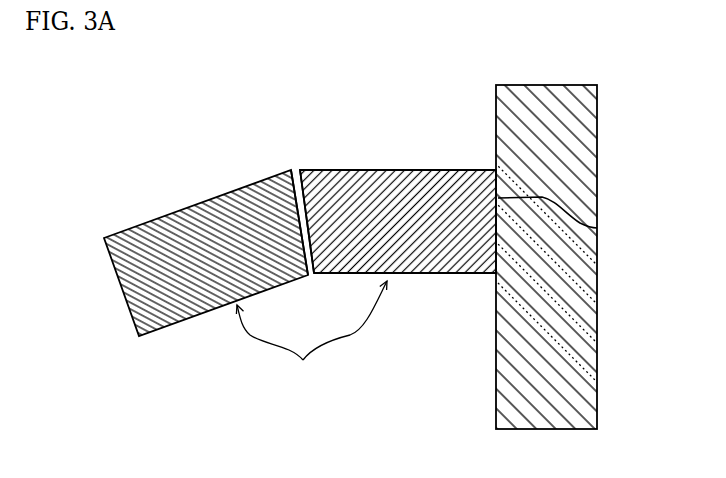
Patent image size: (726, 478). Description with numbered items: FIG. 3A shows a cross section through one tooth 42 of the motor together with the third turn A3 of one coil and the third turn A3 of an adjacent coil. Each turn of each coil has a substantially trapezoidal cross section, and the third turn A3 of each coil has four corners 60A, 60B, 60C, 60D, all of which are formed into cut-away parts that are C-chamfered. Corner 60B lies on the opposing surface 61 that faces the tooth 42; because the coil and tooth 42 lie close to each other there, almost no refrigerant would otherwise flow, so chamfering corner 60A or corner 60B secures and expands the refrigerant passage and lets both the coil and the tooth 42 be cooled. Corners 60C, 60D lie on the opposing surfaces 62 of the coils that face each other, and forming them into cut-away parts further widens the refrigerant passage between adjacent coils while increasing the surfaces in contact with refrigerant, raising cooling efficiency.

The tooth 42 is at (582, 301).
The opposing surface 61 is at (597, 228).
The opposing surface 62 is at (302, 213).
The corner 60A is at (487, 274).
The corner 60B is at (487, 169).
The corner 60C is at (304, 169).
The corner 60D is at (322, 275).
The third turn A3 is at (311, 338).